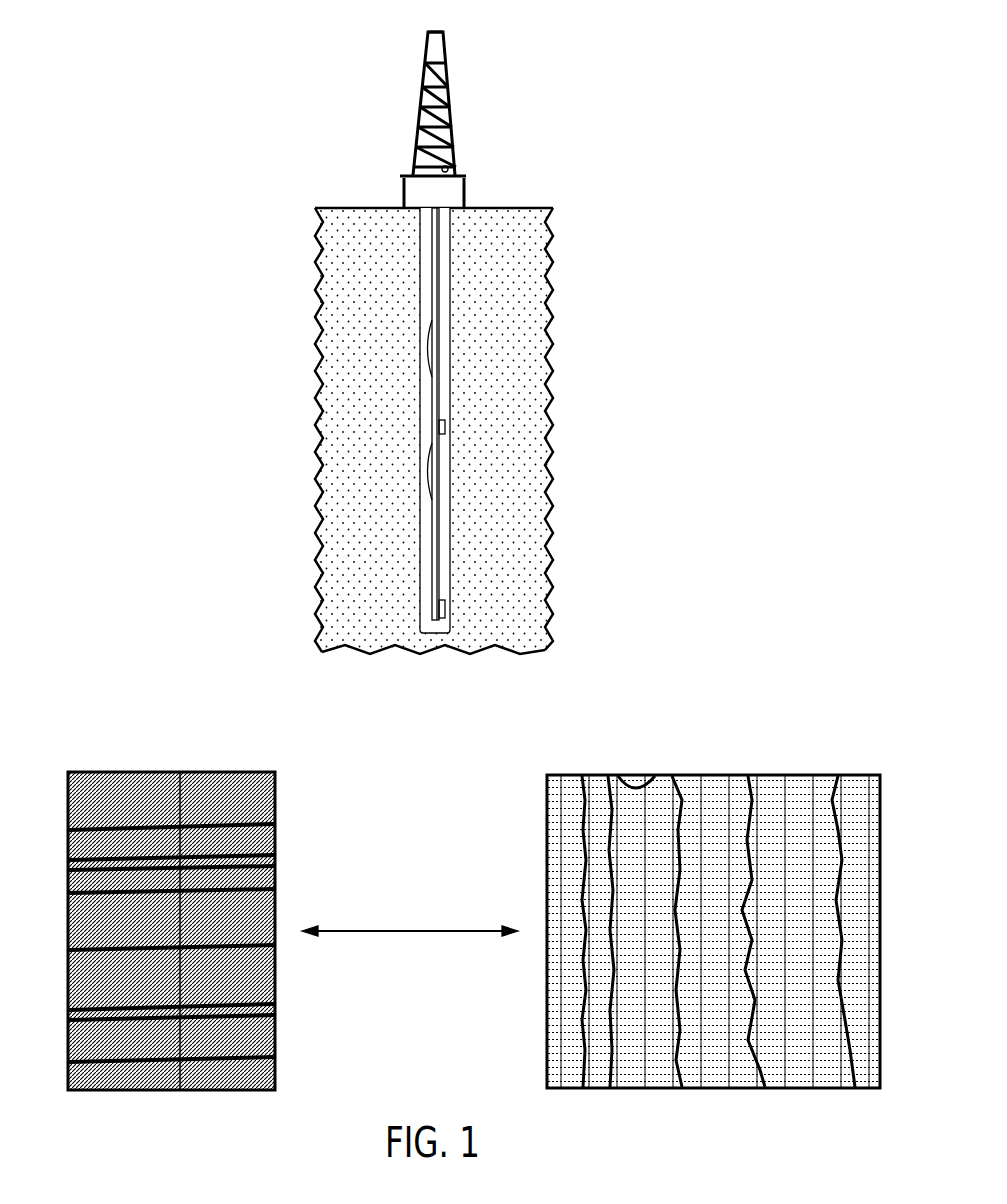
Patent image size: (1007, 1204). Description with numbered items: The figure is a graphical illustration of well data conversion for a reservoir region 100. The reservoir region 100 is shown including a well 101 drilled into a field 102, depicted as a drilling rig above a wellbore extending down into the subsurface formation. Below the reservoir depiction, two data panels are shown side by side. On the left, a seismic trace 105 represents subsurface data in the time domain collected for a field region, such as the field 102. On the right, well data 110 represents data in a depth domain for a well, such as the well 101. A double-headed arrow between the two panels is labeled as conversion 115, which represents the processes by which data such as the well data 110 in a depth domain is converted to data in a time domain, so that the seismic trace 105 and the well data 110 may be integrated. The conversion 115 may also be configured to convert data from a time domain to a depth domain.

The reservoir region 100 is at (285, 140).
The well 101 is at (433, 410).
The field 102 is at (338, 355).
The seismic trace 105 is at (110, 772).
The well data 110 is at (583, 775).
The conversion 115 is at (400, 931).